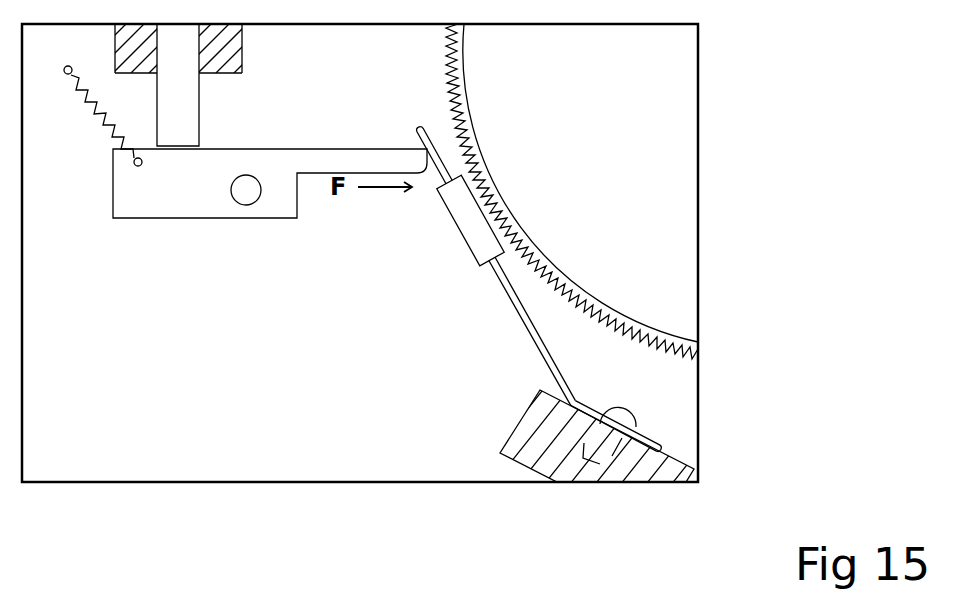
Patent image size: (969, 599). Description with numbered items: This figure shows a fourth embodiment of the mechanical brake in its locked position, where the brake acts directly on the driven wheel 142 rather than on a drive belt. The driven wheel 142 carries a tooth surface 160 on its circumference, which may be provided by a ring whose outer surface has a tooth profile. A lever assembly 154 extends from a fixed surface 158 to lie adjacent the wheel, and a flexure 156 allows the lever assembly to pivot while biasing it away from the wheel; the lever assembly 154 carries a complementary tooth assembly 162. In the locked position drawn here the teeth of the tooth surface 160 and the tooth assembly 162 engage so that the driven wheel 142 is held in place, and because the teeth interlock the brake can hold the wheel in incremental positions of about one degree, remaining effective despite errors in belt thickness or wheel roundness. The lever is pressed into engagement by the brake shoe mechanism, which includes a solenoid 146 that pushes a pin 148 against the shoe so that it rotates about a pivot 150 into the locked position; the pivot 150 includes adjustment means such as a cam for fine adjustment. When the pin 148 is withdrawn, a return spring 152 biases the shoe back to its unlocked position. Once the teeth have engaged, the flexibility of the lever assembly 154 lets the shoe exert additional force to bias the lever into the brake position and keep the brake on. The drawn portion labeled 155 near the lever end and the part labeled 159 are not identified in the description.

The driven wheel 142 is at (548, 108).
The solenoid 146 is at (233, 53).
The pin 148 is at (202, 123).
The pivot 150 is at (247, 204).
The return spring 152 is at (90, 122).
The lever assembly 154 is at (512, 318).
The lever end portion 155 is at (560, 378).
The flexure 156 is at (580, 397).
The fixed surface 158 is at (563, 428).
The slider plate 159 is at (157, 208).
The tooth surface 160 is at (447, 78).
The tooth assembly 162 is at (477, 227).